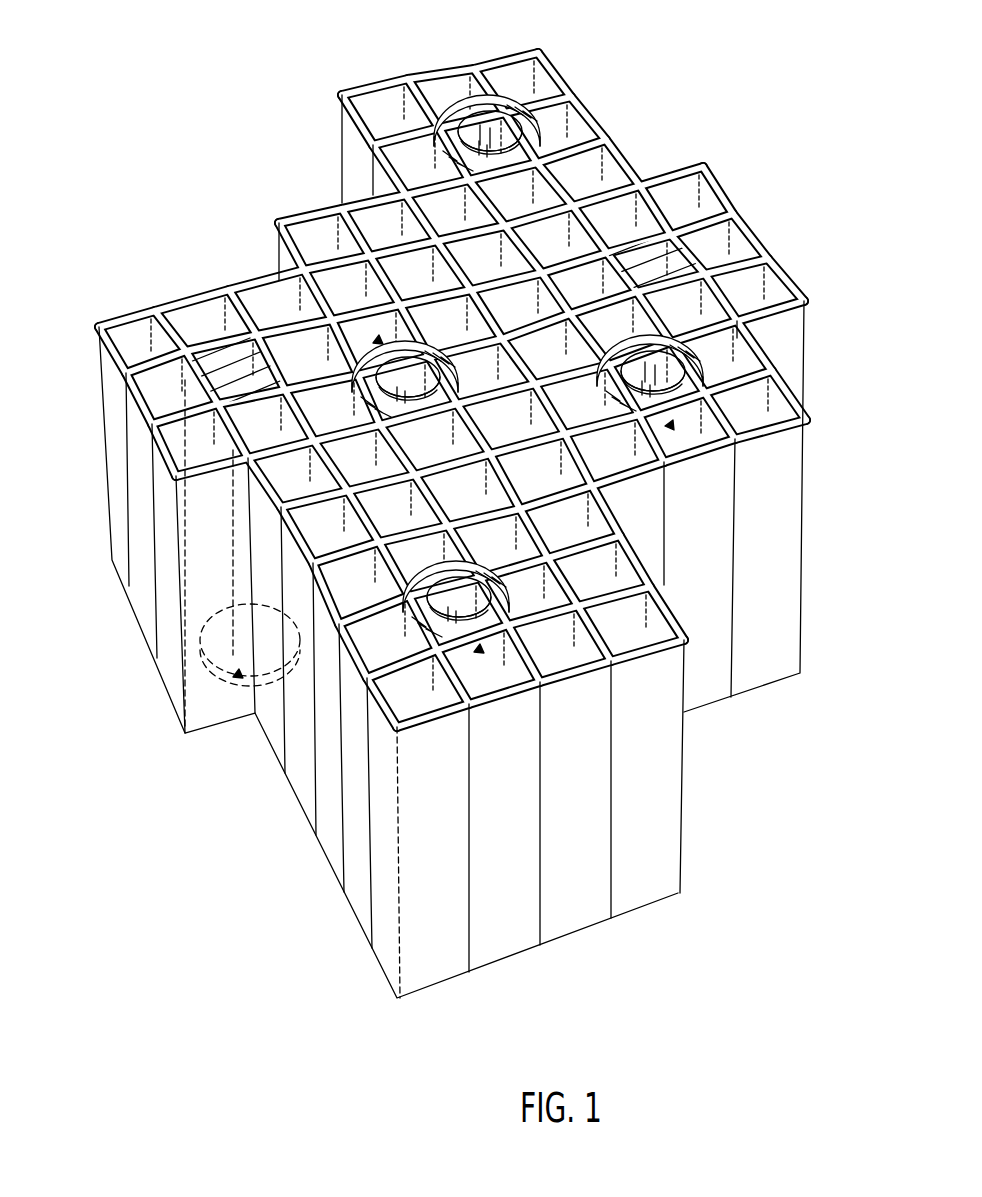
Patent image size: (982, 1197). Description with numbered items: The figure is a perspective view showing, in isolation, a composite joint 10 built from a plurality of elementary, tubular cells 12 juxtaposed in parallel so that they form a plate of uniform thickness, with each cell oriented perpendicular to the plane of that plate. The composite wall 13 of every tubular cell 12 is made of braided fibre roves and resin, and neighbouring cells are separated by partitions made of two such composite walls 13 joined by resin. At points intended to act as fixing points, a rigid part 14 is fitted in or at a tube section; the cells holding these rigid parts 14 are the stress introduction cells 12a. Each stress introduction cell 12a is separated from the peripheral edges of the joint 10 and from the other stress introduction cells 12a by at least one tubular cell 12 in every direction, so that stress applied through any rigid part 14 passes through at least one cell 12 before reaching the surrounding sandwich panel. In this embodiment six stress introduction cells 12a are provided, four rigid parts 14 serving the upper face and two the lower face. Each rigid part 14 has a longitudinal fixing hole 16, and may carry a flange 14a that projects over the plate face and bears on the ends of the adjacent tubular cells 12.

The composite joint 10 is at (452, 500).
The elementary tubular cell 12 is at (270, 250).
The stress introduction cell 12a is at (190, 372).
The composite wall 13 is at (378, 178).
The rigid part 14 is at (373, 343).
The flange 14a is at (460, 108).
The fixing hole 16 is at (486, 138).